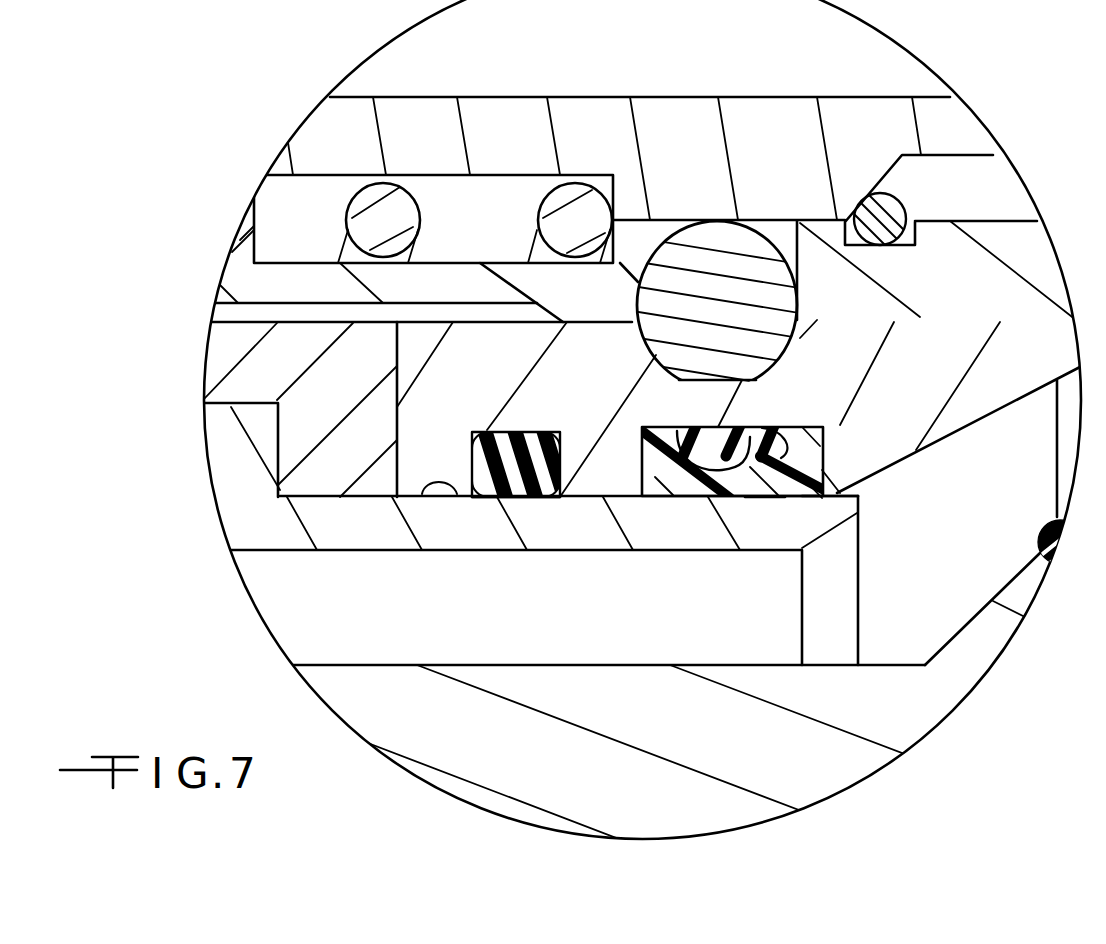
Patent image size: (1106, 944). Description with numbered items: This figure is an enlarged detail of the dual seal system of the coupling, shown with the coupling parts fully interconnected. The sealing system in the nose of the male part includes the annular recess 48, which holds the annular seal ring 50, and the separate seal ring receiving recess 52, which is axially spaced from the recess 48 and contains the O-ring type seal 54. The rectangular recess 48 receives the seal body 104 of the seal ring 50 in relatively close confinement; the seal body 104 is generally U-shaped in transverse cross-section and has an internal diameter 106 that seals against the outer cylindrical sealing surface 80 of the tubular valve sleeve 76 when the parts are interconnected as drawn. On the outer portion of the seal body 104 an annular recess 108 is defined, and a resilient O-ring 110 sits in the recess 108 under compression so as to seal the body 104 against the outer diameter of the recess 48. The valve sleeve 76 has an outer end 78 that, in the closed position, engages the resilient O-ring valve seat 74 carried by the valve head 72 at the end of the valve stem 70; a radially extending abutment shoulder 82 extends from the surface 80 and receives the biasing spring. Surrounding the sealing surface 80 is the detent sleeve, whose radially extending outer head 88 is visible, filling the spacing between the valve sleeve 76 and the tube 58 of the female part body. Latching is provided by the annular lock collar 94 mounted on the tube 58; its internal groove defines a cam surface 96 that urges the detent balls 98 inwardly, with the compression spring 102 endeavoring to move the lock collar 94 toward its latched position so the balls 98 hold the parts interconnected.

The annular recess 48 is at (813, 425).
The annular seal ring 50 is at (765, 497).
The seal ring receiving recess 52 is at (527, 432).
The O-ring type seal 54 is at (530, 482).
The tube 58 is at (235, 282).
The valve stem 70 is at (830, 765).
The valve head 72 is at (1012, 640).
The resilient O-ring valve seat 74 is at (1053, 530).
The tubular valve sleeve 76 is at (363, 523).
The outer end 78 is at (823, 498).
The outer cylindrical sealing surface 80 is at (440, 496).
The abutment shoulder 82 is at (230, 453).
The outer head 88 is at (323, 397).
The annular lock collar 94 is at (513, 117).
The cam surface 96 is at (630, 340).
The detent balls 98 is at (735, 250).
The compression spring 102 is at (420, 208).
The seal body 104 is at (673, 476).
The internal diameter 106 is at (712, 470).
The annular recess 108 is at (800, 429).
The resilient O-ring 110 is at (717, 442).